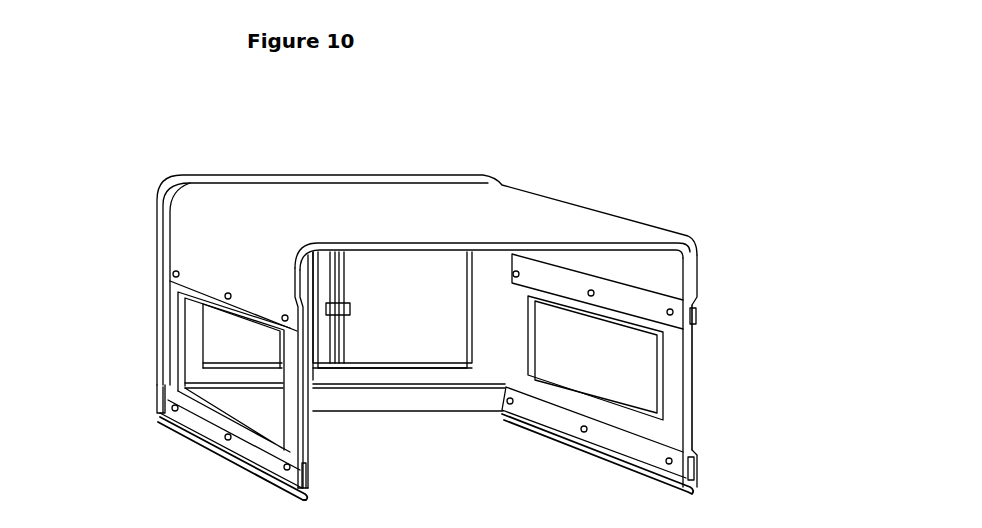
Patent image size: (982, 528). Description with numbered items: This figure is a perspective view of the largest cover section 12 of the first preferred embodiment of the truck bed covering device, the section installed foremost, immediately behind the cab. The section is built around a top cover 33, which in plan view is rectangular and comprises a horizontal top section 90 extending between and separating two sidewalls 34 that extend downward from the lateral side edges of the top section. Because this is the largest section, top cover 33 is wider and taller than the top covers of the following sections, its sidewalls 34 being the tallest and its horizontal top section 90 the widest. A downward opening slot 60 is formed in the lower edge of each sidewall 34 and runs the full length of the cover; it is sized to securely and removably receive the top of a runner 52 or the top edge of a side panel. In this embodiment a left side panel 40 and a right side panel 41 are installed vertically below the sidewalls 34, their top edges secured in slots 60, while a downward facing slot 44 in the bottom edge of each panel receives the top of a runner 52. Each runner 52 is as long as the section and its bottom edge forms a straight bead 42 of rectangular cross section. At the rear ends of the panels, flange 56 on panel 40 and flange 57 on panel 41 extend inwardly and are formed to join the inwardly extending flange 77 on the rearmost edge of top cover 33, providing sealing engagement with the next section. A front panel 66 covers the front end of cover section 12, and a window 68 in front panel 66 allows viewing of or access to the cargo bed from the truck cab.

The largest cover section 12 is at (388, 134).
The horizontal top section 90 is at (502, 218).
The top cover 33 is at (208, 227).
The front panel 66 is at (195, 332).
The window 68 is at (237, 342).
The side panel 40 is at (207, 423).
The inwardly extending flange 77 is at (690, 270).
The top cover sidewall 34 is at (698, 283).
The downward opening slot 60 is at (695, 308).
The flange 56 is at (307, 440).
The side panel 41 is at (695, 397).
The flange 57 is at (685, 398).
The bead 42 is at (693, 485).
The downward facing slot 44 is at (690, 452).
The runner 52 is at (690, 472).